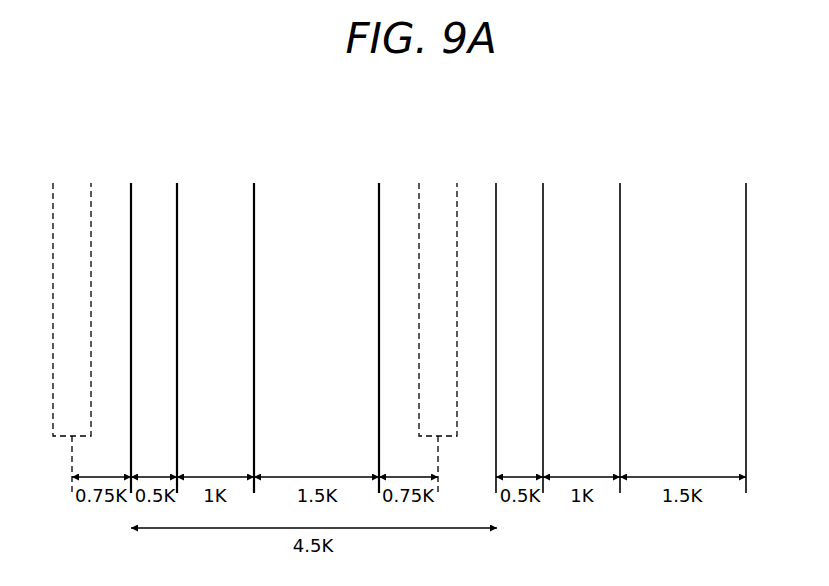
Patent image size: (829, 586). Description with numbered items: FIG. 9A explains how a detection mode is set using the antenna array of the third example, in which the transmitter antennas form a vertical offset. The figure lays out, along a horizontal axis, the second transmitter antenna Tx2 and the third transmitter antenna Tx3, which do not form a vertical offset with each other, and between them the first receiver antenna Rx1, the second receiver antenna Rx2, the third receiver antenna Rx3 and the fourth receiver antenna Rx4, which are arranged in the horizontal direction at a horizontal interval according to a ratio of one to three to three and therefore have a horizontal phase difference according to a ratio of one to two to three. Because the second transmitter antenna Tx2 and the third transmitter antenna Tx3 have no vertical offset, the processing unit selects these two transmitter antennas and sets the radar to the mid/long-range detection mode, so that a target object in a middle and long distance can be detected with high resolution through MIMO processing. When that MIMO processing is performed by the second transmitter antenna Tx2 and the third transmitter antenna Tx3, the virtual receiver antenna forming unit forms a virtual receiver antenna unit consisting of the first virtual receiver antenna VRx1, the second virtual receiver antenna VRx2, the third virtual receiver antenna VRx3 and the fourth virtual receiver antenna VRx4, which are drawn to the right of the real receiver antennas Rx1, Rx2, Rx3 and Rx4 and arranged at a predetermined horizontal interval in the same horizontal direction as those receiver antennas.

The second transmitter antenna Tx2 is at (72, 315).
The first receiver antenna Rx1 is at (130, 314).
The second receiver antenna Rx2 is at (177, 314).
The third receiver antenna Rx3 is at (253, 314).
The fourth receiver antenna Rx4 is at (379, 314).
The third transmitter antenna Tx3 is at (438, 315).
The first virtual receiver antenna VRx1 is at (494, 314).
The second virtual receiver antenna VRx2 is at (549, 314).
The third virtual receiver antenna VRx3 is at (619, 314).
The fourth virtual receiver antenna VRx4 is at (747, 314).